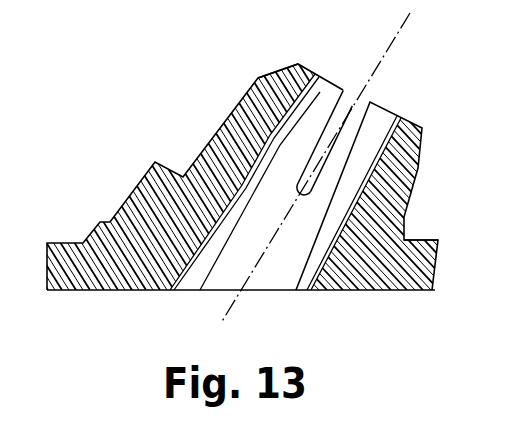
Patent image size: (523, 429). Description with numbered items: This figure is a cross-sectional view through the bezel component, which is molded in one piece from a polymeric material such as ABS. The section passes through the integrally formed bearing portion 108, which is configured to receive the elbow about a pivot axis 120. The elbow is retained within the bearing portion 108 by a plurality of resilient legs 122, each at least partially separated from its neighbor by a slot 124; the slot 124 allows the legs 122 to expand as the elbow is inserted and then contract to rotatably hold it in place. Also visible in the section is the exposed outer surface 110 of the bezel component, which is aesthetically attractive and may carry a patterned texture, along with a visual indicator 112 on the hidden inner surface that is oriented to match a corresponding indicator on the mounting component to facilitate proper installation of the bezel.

The bearing portion 108 is at (208, 139).
The exposed outer surface 110 is at (82, 291).
The visual indicator 112 is at (273, 82).
The pivot axis 120 is at (388, 50).
The resilient legs 122 is at (412, 129).
The slot 124 is at (352, 104).